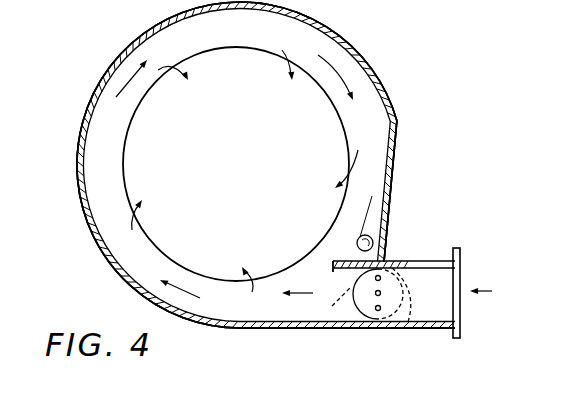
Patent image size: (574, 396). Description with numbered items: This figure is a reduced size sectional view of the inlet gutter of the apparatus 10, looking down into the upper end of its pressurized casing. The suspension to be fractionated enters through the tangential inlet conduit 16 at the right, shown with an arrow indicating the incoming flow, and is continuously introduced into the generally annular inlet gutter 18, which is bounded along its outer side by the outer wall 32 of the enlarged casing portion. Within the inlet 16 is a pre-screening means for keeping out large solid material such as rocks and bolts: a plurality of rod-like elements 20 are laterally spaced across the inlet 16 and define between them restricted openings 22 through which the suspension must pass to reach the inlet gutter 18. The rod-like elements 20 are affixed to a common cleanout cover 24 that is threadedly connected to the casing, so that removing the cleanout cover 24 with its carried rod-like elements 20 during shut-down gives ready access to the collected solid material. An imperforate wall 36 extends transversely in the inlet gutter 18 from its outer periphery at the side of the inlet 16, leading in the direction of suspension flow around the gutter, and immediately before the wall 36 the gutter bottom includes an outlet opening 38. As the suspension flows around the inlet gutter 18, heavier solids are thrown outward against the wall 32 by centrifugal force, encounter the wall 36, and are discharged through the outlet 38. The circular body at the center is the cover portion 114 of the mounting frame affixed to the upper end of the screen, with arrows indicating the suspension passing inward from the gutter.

The apparatus 10 is at (396, 104).
The inlet conduit 16 is at (447, 262).
The inlet gutter 18 is at (94, 160).
The rod-like elements 20 is at (381, 276).
The restricted openings 22 is at (403, 287).
The cleanout cover 24 is at (335, 310).
The outer wall 32 is at (358, 52).
The imperforate wall 36 is at (333, 268).
The outlet opening 38 is at (373, 237).
The cover portion 114 is at (259, 157).